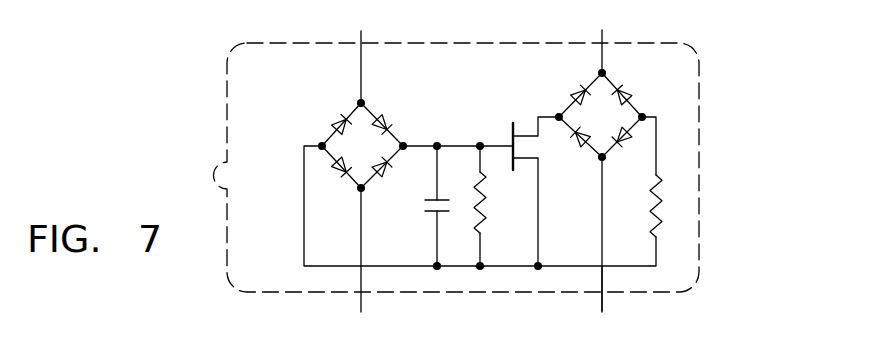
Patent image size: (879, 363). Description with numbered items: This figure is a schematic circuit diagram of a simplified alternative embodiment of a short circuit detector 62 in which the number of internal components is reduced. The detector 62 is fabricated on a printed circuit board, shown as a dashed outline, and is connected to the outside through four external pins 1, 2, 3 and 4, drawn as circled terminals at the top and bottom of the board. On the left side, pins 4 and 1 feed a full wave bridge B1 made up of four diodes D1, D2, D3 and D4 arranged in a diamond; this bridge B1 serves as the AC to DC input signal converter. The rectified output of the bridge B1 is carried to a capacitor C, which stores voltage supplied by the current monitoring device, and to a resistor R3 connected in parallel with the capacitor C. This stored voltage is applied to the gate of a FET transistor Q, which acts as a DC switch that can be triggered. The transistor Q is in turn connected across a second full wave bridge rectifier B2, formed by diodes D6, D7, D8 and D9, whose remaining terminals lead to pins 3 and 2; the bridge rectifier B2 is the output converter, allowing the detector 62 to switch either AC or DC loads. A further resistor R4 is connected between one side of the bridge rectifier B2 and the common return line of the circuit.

The short circuit detector 62 is at (703, 154).
The full wave bridge B1 is at (343, 129).
The full wave bridge rectifier B2 is at (616, 118).
The diode D1 is at (330, 113).
The diode D2 is at (396, 113).
The diode D3 is at (332, 179).
The diode D4 is at (390, 179).
The diode D6 is at (573, 149).
The diode D7 is at (568, 84).
The diode D8 is at (628, 149).
The diode D9 is at (631, 84).
The capacitor C is at (427, 214).
The resistor R3 is at (494, 202).
The resistor R4 is at (640, 206).
The FET transistor Q is at (506, 131).
The external pin 1 is at (362, 265).
The external pin 2 is at (602, 303).
The external pin 3 is at (602, 36).
The external pin 4 is at (361, 52).